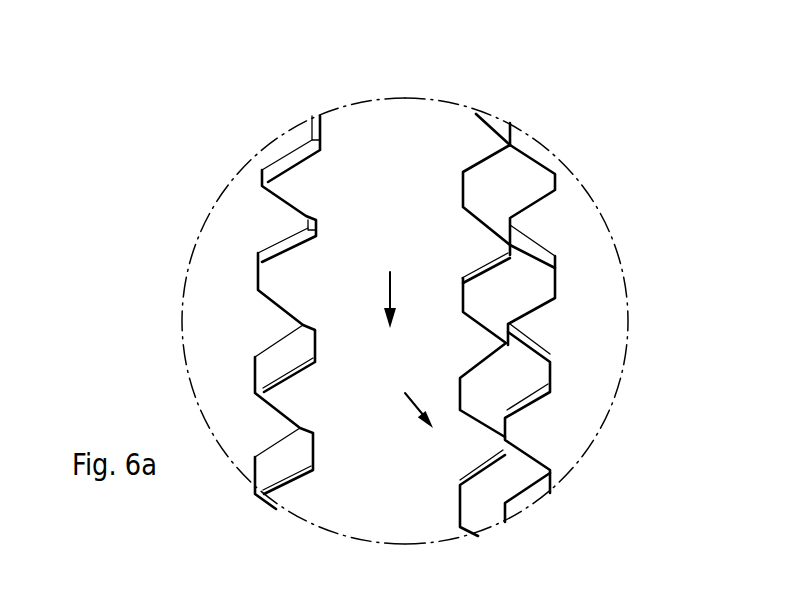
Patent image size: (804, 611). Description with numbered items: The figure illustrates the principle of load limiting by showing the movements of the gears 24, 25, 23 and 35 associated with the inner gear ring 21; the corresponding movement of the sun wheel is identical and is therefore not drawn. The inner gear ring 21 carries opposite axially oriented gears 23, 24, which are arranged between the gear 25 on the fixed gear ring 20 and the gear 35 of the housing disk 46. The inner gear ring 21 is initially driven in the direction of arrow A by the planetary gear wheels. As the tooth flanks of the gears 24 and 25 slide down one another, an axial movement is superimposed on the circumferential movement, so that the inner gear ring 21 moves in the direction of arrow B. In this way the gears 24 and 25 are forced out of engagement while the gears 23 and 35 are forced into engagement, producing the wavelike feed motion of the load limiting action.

The fixed gear ring 20 is at (208, 277).
The inner gear ring 21 is at (380, 125).
The gear 23 is at (483, 138).
The gear 24 is at (295, 178).
The gear 25 is at (280, 218).
The gear 35 is at (538, 222).
The housing disk 46 is at (604, 288).